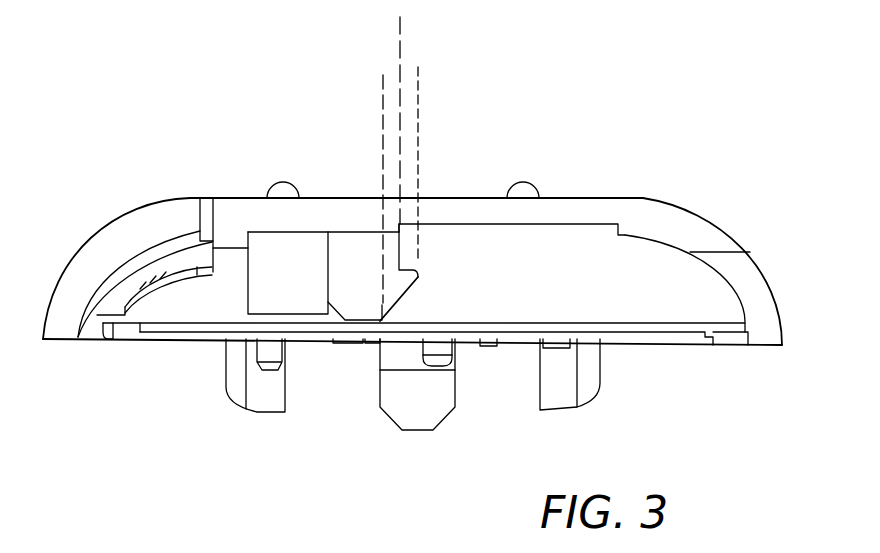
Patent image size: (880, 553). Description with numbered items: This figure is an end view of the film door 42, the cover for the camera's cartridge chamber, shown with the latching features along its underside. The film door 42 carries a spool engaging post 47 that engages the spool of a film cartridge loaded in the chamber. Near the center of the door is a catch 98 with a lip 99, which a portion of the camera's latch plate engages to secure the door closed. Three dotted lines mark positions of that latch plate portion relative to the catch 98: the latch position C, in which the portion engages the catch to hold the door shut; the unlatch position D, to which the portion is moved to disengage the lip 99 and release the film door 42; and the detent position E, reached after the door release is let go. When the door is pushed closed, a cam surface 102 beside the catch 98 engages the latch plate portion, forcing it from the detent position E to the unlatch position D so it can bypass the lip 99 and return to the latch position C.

The film door 42 is at (680, 227).
The spool engaging post 47 is at (430, 417).
The catch 98 is at (368, 272).
The lip 99 is at (422, 288).
The cam surface 102 is at (405, 297).
The latch position C is at (402, 43).
The unlatch position D is at (418, 115).
The detent position E is at (383, 102).